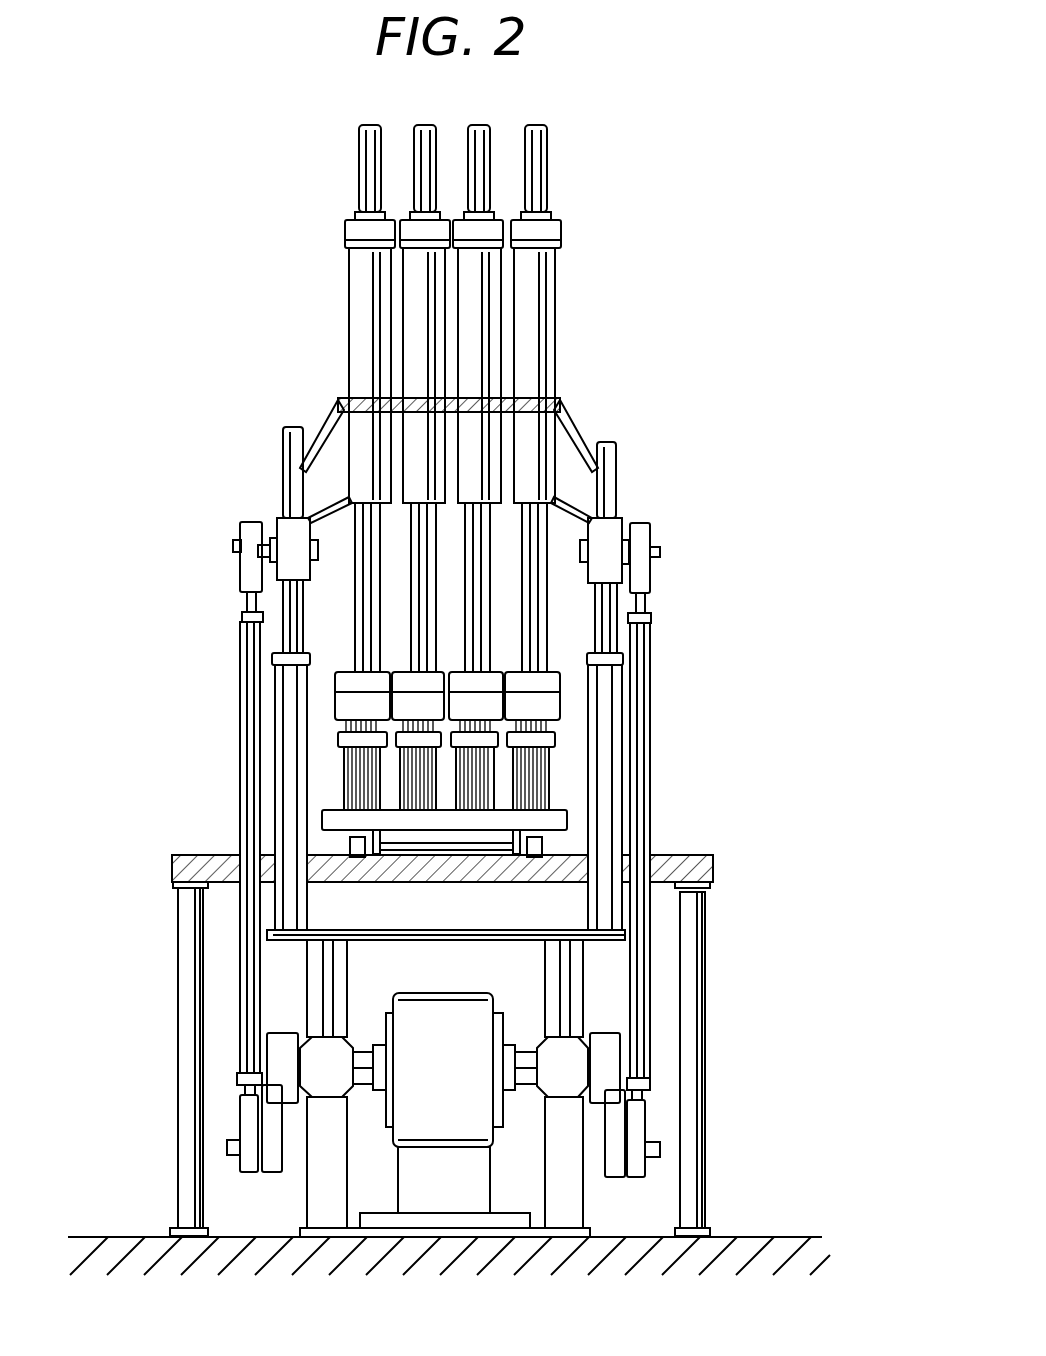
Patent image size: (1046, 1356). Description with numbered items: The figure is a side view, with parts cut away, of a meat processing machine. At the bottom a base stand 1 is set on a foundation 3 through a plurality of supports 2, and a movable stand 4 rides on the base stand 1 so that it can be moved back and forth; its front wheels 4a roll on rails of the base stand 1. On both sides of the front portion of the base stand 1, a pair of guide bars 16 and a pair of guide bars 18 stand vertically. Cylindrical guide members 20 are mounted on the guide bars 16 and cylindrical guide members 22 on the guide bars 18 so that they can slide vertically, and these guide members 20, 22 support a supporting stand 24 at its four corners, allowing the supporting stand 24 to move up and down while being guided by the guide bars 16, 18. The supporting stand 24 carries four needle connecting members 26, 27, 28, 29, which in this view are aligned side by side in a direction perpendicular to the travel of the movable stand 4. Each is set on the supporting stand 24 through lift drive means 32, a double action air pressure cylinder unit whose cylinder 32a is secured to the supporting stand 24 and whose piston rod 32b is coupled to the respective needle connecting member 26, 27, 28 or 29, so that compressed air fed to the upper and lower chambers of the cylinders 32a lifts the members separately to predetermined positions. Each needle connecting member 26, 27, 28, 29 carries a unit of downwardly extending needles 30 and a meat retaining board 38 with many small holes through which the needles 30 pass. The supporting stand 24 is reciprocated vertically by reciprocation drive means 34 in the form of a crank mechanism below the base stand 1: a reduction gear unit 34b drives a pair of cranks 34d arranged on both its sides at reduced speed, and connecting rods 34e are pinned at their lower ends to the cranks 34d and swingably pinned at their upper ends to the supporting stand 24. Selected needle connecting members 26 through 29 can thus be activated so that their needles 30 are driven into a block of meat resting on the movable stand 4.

The base stand 1 is at (712, 858).
The supports 2 is at (185, 952).
The foundation 3 is at (722, 1245).
The movable stand 4 is at (568, 818).
The front wheels 4a is at (357, 857).
The guide bars 16 is at (290, 627).
The guide bars 18 is at (610, 633).
The cylindrical guide members 20 is at (293, 553).
The cylindrical guide members 22 is at (607, 533).
The supporting stand 24 is at (560, 410).
The needle connecting member 26 is at (350, 678).
The needle connecting member 27 is at (400, 678).
The needle connecting member 28 is at (495, 680).
The needle connecting member 29 is at (620, 688).
The needles 30 is at (410, 773).
The lift drive means 32 is at (566, 333).
The cylinders 32a is at (420, 272).
The piston rods 32b is at (420, 570).
The reciprocation drive means 34 is at (655, 1037).
The reduction gear unit 34b is at (430, 1000).
The cranks 34d is at (270, 1172).
The connecting rods 34e is at (250, 787).
The meat retaining boards 38 is at (397, 718).